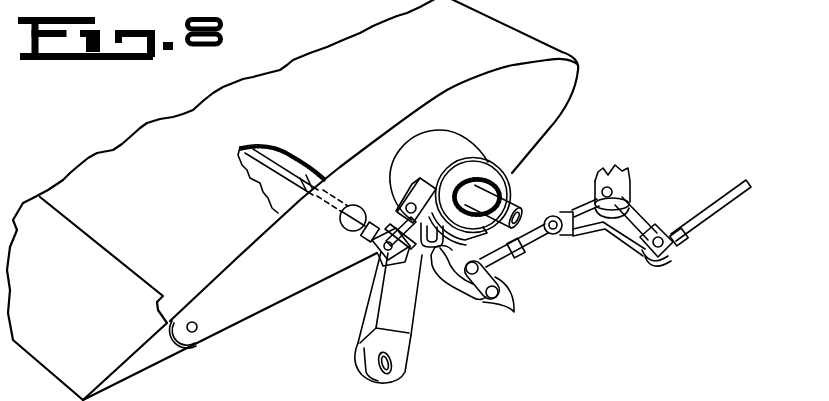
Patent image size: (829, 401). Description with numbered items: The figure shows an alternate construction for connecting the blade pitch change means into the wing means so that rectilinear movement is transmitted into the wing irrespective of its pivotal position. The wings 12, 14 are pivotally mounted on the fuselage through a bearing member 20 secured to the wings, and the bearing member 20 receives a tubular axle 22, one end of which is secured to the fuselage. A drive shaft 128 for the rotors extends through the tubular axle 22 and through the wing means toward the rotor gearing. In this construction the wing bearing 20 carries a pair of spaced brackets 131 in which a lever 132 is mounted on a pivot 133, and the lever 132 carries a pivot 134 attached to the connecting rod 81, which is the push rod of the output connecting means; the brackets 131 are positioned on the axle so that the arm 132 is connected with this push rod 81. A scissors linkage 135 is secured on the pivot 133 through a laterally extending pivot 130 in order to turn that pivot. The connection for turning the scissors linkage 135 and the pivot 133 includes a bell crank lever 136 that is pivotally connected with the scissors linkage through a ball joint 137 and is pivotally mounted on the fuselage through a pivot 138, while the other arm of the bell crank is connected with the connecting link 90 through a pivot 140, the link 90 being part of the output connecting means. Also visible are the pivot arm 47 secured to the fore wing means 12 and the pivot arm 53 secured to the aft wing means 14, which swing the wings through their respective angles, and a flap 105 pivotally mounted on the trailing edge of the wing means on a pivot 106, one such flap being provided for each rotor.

The fore wing means 12 is at (572, 80).
The aft wing means 14 is at (361, 229).
The bearing member 20 is at (468, 148).
The axle 22 is at (497, 184).
The drive shaft 128 is at (517, 191).
The spaced brackets 131 is at (404, 193).
The pivot 133 is at (404, 198).
The lever 132 is at (375, 245).
The pivot 134 is at (378, 254).
The pivot arm 47 is at (360, 333).
The pivot arm 53 is at (355, 355).
The connecting rod 81 is at (282, 168).
The pivot 106 is at (198, 330).
The flap 105 is at (150, 363).
The laterally extending pivot 130 is at (474, 300).
The scissors linkage 135 is at (510, 305).
The ball joint 137 is at (555, 242).
The bell crank lever 136 is at (630, 228).
The pivot 138 is at (603, 183).
The pivot 140 is at (660, 235).
The connecting link 90 is at (722, 188).